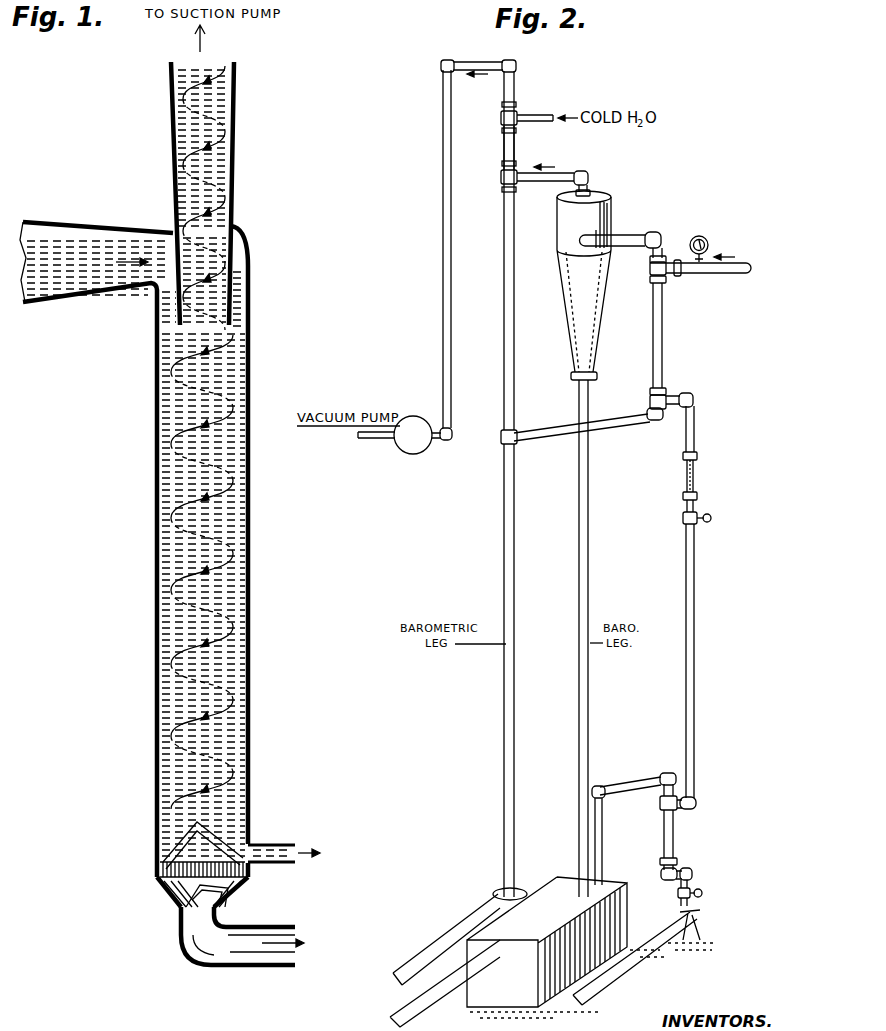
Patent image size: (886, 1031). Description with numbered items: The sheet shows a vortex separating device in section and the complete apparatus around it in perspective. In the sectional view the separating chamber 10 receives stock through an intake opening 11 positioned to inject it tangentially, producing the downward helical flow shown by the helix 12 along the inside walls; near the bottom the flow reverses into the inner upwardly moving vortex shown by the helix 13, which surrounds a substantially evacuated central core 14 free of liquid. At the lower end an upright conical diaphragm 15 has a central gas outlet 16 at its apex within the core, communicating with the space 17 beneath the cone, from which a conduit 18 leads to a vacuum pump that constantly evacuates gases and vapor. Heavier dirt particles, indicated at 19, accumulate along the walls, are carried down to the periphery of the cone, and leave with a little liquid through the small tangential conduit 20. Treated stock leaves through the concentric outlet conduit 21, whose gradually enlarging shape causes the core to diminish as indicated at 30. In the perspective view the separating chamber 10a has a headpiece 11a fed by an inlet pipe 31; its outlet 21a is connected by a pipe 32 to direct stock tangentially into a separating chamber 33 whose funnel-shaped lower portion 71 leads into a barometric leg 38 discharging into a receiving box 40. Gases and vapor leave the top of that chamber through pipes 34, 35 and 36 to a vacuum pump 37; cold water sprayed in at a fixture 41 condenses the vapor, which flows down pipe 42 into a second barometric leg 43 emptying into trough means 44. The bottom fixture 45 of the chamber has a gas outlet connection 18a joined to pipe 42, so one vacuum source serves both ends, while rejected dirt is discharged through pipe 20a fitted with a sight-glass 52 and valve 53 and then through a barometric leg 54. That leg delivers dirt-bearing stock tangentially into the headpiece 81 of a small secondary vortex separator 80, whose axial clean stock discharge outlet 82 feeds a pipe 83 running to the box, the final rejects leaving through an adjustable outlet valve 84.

In FIG. 1, the separating chamber 10 is at (156, 480).
In FIG. 1, the intake opening 11 is at (90, 297).
In FIG. 1, the helix 12 is at (172, 397).
In FIG. 1, the helix 13 is at (202, 548).
In FIG. 1, the central core 14 is at (205, 512).
In FIG. 1, the conical diaphragm 15 is at (167, 867).
In FIG. 1, the central gas outlet 16 is at (198, 823).
In FIG. 1, the space 17 is at (228, 888).
In FIG. 1, the conduit 18 is at (245, 964).
In FIG. 1, the accumulated particles 19 is at (238, 764).
In FIG. 1, the tangentially connected conduit 20 is at (262, 846).
In FIG. 1, the outlet conduit 21 is at (231, 221).
In FIG. 1, the diminishing core region 30 is at (205, 165).
In FIG. 2, the separating chamber 10a is at (663, 330).
In FIG. 2, the headpiece 11a is at (652, 279).
In FIG. 2, the gas outlet connection 18a is at (615, 431).
In FIG. 2, the pipe 20a is at (672, 403).
In FIG. 2, the outlet 21a is at (665, 249).
In FIG. 2, the inlet pipe 31 is at (746, 273).
In FIG. 2, the pipe 32 is at (631, 232).
In FIG. 2, the separating chamber 33 is at (609, 212).
In FIG. 2, the pipe 34 is at (563, 173).
In FIG. 2, the pipe 35 is at (517, 149).
In FIG. 2, the pipe 36 is at (452, 183).
In FIG. 2, the vacuum pump 37 is at (414, 453).
In FIG. 2, the barometric leg 38 is at (589, 518).
In FIG. 2, the receiving box 40 is at (607, 885).
In FIG. 2, the fixture 41 is at (517, 113).
In FIG. 2, the pipe 42 is at (504, 271).
In FIG. 2, the barometric leg 43 is at (505, 509).
In FIG. 2, the trough means 44 is at (483, 903).
In FIG. 2, the fixture 45 is at (650, 397).
In FIG. 2, the sight-glass 52 is at (693, 480).
In FIG. 2, the valve 53 is at (709, 518).
In FIG. 2, the barometric leg 54 is at (695, 624).
In FIG. 2, the lower portion 71 is at (583, 297).
In FIG. 2, the secondary vortex separator 80 is at (674, 825).
In FIG. 2, the headpiece 81 is at (661, 801).
In FIG. 2, the clean stock discharge outlet 82 is at (672, 777).
In FIG. 2, the pipe 83 is at (613, 785).
In FIG. 2, the adjustable outlet valve 84 is at (702, 895).